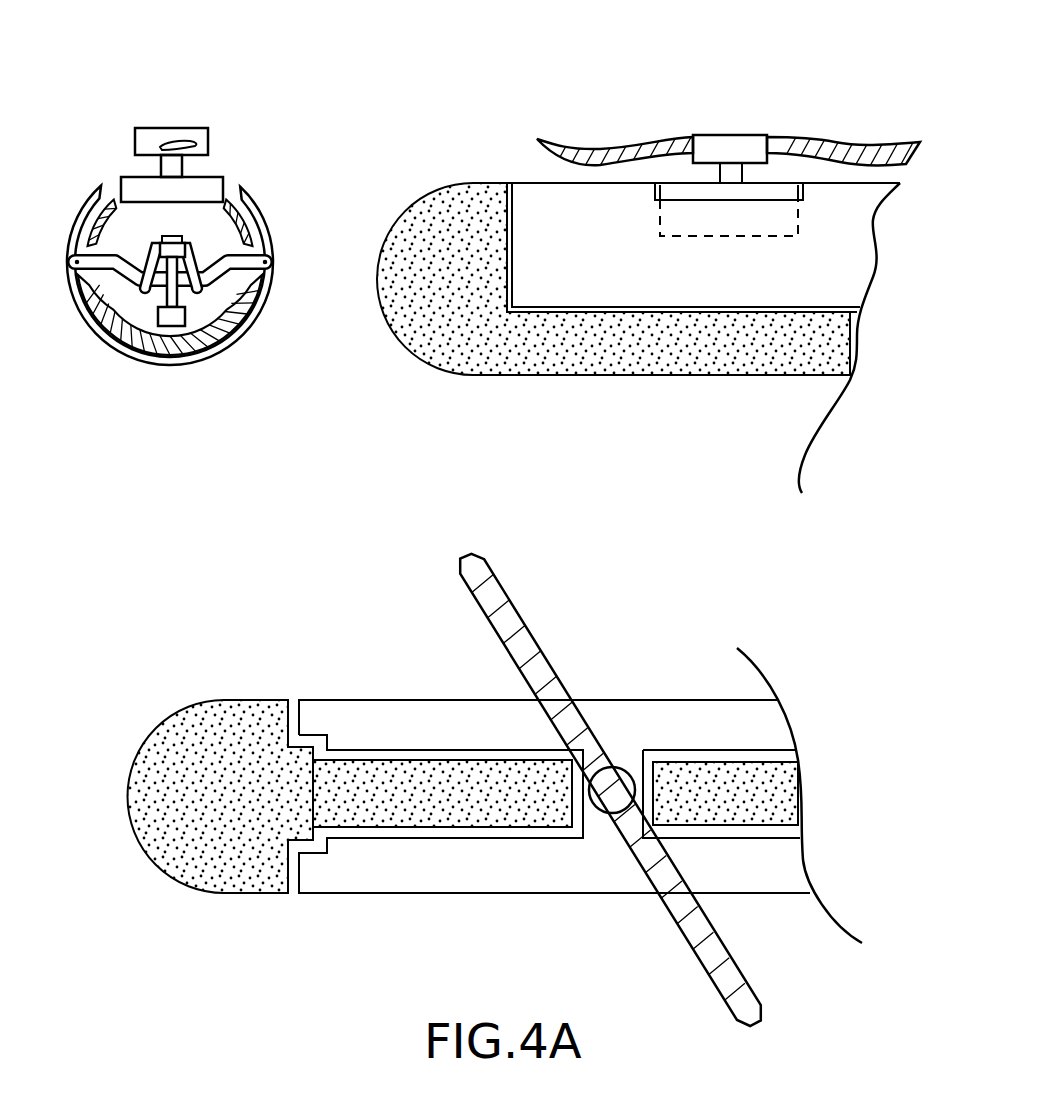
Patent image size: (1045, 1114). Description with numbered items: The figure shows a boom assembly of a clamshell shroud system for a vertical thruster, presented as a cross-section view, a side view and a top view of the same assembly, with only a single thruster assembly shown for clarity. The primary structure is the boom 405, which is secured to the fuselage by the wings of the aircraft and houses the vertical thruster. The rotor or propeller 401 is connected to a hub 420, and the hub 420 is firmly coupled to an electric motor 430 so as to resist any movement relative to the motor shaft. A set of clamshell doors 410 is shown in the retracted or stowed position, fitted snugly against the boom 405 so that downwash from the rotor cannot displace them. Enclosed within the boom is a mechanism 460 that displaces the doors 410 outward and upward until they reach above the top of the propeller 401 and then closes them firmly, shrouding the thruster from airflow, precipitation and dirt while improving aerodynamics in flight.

The propeller 401 is at (181, 138).
The boom 405 is at (207, 357).
The clamshell doors 410 is at (257, 203).
The hub 420 is at (150, 128).
The electric motor 430 is at (130, 184).
The mechanism 460 is at (273, 262).